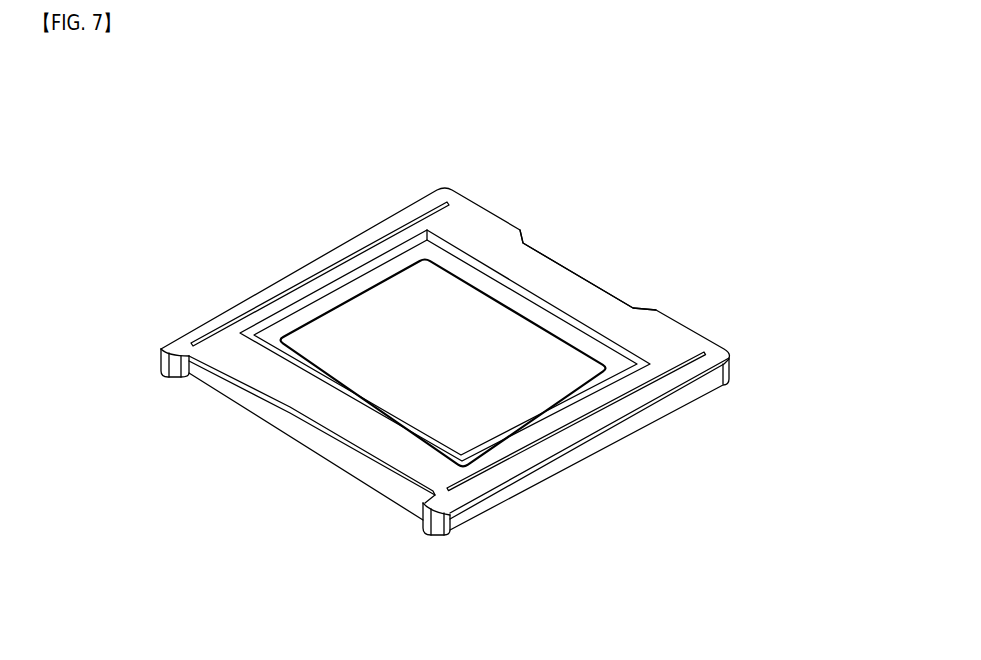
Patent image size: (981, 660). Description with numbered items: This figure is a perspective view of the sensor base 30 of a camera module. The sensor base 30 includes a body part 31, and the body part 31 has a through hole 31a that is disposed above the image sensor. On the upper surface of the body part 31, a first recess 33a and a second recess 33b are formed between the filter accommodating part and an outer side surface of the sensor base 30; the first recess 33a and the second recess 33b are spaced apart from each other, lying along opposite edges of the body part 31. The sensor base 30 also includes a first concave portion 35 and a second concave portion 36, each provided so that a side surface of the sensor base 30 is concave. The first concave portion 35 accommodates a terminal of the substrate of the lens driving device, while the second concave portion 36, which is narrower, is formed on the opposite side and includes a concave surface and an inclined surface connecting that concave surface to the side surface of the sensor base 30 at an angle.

The sensor base 30 is at (186, 147).
The body part 31 is at (668, 332).
The through hole 31a is at (410, 318).
The first recess 33a is at (245, 314).
The second recess 33b is at (589, 415).
The first concave portion 35 is at (321, 446).
The second concave portion 36 is at (593, 278).